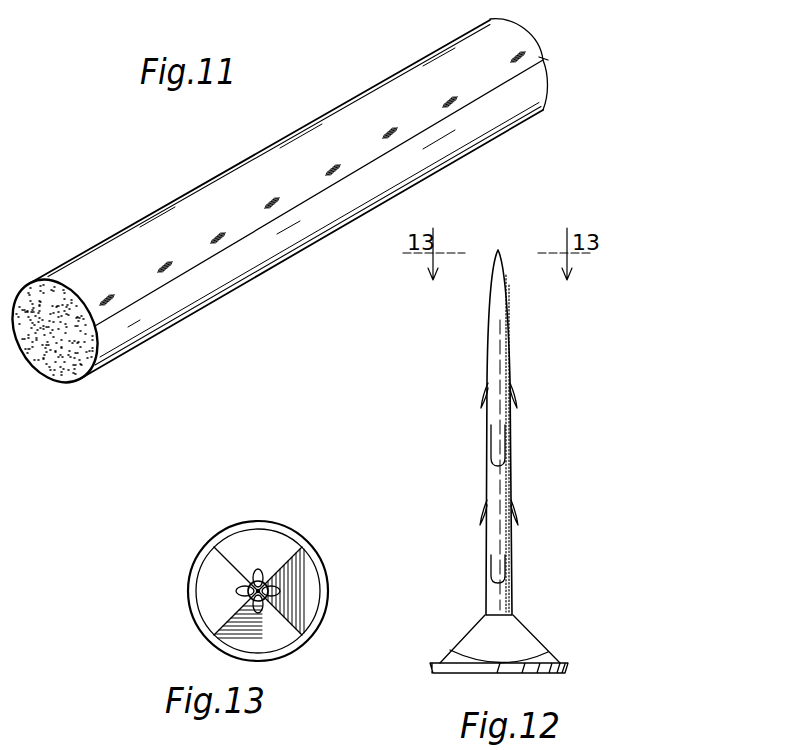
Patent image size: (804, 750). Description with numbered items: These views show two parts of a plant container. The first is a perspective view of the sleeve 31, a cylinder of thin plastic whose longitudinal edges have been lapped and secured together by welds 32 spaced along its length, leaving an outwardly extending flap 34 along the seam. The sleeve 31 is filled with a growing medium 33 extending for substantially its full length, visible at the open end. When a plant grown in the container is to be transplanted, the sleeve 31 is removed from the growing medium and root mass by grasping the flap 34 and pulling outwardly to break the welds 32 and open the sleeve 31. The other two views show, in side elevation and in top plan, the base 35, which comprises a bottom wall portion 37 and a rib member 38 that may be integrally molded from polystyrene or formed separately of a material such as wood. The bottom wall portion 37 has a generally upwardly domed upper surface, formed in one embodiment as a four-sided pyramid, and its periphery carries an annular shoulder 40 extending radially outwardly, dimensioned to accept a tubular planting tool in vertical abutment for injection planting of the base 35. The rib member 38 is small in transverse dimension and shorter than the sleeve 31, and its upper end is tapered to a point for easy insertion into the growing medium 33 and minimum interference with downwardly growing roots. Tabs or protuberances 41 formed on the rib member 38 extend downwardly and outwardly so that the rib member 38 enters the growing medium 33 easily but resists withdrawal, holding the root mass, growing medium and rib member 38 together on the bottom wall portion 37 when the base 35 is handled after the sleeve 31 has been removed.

In FIG. 11, the sleeve 31 is at (213, 180).
In FIG. 11, the welds 32 is at (160, 265).
In FIG. 11, the growing medium 33 is at (67, 350).
In FIG. 11, the outwardly extending flap 34 is at (213, 256).
In FIG. 12, the base 35 is at (527, 485).
In FIG. 13, the base 35 is at (226, 519).
In FIG. 12, the bottom wall portion 37 is at (530, 632).
In FIG. 13, the bottom wall portion 37 is at (215, 565).
In FIG. 12, the rib member 38 is at (490, 462).
In FIG. 12, the annular shoulder 40 is at (563, 661).
In FIG. 13, the annular shoulder 40 is at (192, 604).
In FIG. 12, the tabs or protuberances 41 is at (483, 403).
In FIG. 13, the tabs or protuberances 41 is at (243, 588).